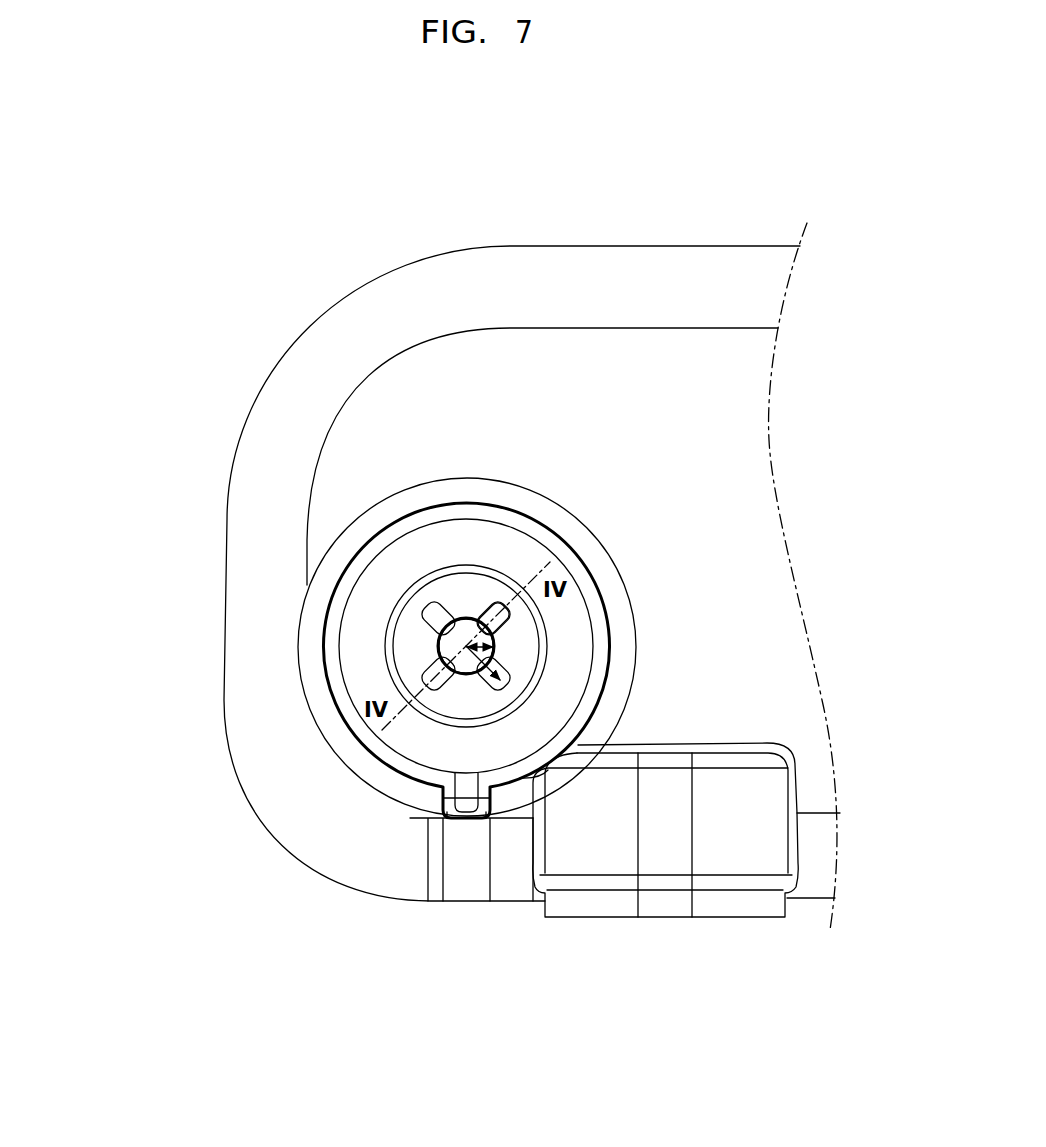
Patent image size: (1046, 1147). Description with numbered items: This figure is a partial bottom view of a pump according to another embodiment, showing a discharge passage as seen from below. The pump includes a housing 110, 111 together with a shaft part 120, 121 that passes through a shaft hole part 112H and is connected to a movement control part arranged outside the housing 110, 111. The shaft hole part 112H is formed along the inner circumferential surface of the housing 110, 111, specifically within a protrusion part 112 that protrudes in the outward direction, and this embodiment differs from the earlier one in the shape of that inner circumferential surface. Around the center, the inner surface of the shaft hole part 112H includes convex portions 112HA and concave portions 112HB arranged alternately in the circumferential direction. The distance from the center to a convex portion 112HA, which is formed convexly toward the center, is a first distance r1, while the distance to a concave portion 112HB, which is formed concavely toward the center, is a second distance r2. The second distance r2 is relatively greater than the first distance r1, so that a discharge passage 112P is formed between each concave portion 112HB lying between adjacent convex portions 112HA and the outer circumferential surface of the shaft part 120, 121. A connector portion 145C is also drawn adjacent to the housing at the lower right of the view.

The housing 110 is at (590, 576).
The housing body portion 111 is at (774, 681).
The protrusion part 112 is at (463, 587).
The shaft hole part 112H is at (295, 646).
The convex portion 112HA is at (437, 643).
The concave portion 112HB is at (430, 667).
The discharge passage 112P is at (505, 618).
The shaft part 120 is at (295, 577).
The coupling member 121 is at (457, 641).
The first distance r1 is at (483, 653).
The second distance r2 is at (478, 668).
The connector portion 145C is at (598, 862).